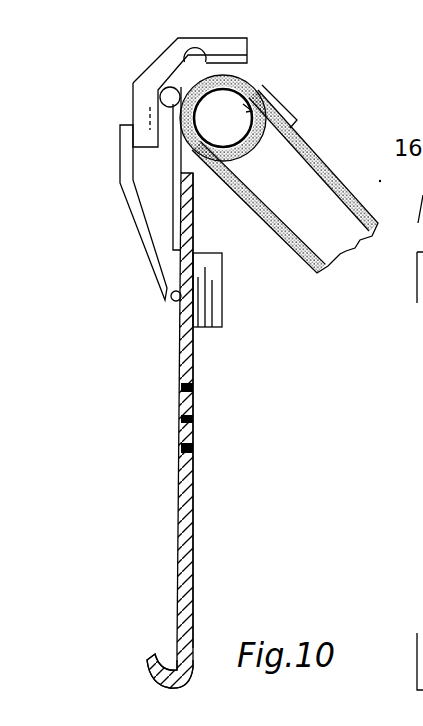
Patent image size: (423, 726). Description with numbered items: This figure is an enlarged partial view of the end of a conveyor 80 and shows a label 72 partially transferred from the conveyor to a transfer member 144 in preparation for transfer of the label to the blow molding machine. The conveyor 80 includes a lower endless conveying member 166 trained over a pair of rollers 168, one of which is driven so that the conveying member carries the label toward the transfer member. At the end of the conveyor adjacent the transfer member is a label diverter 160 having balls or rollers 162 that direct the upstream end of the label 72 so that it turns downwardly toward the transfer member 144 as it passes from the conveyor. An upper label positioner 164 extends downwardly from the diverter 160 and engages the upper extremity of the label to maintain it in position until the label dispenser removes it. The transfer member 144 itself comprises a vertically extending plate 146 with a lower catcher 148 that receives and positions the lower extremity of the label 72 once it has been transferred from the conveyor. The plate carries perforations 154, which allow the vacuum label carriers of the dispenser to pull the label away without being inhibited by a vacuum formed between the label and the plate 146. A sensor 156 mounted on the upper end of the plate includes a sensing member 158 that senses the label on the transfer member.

The label 72 is at (176, 174).
The conveyor 80 is at (320, 124).
The transfer member 144 is at (200, 508).
The vertically extending plate 146 is at (193, 487).
The lower catcher 148 is at (170, 688).
The perforations 154 is at (193, 448).
The sensor 156 is at (222, 288).
The sensing member 158 is at (172, 303).
The label diverter 160 is at (160, 68).
The balls or rollers 162 is at (203, 62).
The upper label positioner 164 is at (120, 166).
The lower endless conveying member 166 is at (327, 163).
The rollers 168 is at (258, 100).